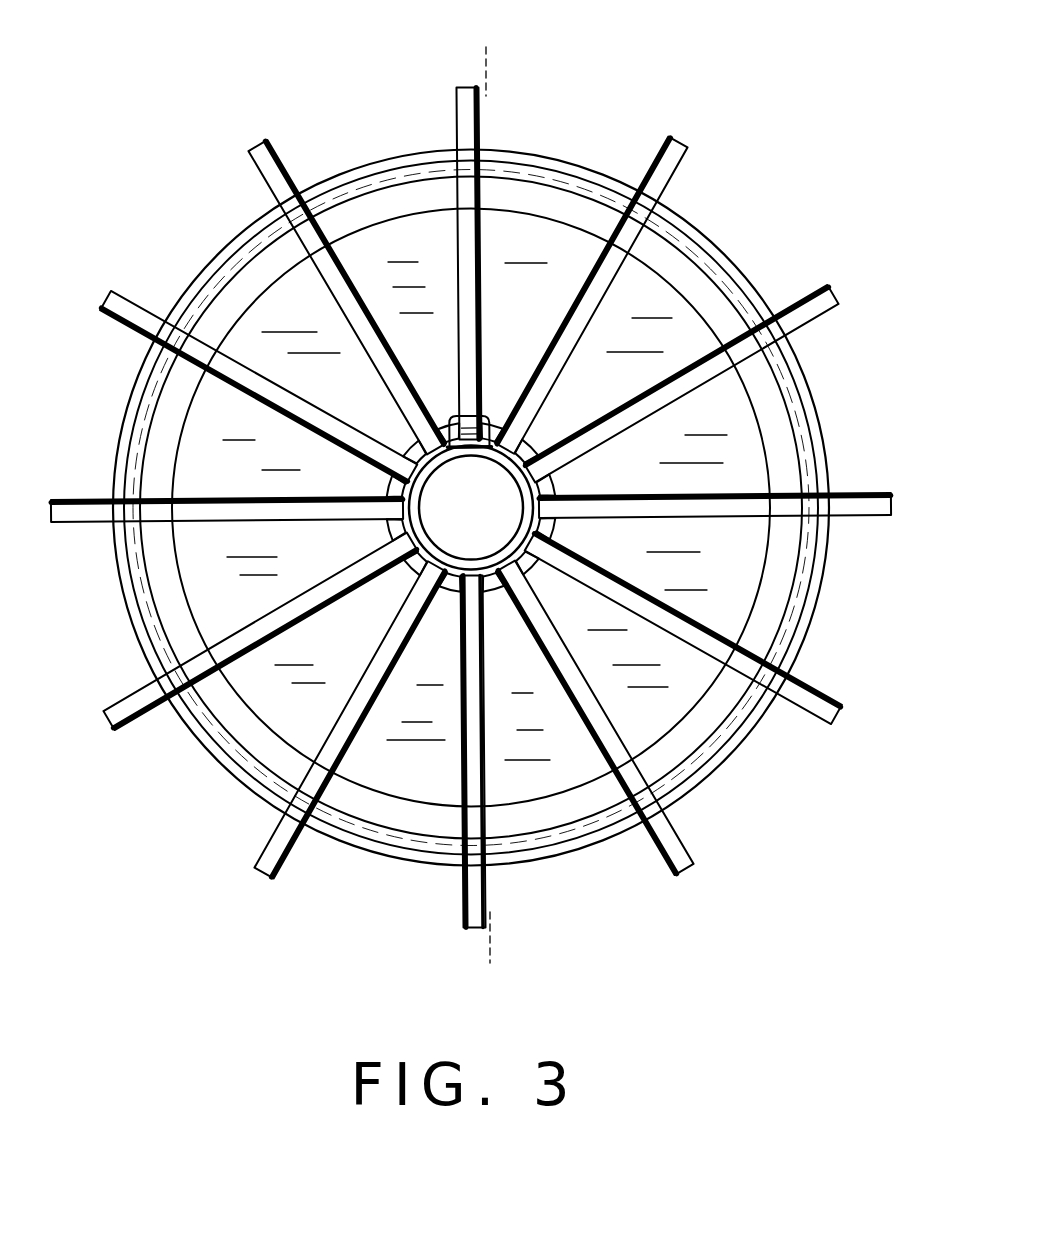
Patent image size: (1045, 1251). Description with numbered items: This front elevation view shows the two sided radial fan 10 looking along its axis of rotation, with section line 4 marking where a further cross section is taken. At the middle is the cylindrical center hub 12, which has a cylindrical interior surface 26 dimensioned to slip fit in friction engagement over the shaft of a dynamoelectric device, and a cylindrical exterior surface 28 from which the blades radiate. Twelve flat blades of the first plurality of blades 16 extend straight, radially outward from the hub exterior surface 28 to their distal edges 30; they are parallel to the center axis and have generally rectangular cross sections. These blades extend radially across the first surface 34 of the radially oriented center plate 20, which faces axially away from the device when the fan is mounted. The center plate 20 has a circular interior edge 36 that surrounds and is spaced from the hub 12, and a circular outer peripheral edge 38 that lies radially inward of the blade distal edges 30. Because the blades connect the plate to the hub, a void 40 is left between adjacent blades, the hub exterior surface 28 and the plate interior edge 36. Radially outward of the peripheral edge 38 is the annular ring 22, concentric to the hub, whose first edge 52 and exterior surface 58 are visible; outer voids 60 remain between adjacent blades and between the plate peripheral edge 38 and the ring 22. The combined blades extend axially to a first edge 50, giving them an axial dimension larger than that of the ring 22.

The section line 4- 4 is at (486, 47).
The two sided radial fan 10 is at (680, 93).
The center hub 12 is at (395, 450).
The first plurality of fan blades 16 is at (150, 307).
The radially oriented plate 20 is at (731, 440).
The annular ring 22 is at (833, 462).
The cylindrical interior surface 26 is at (452, 517).
The cylindrical exterior surface 28 is at (440, 545).
The distal edges 30 is at (107, 303).
The first surface 34 is at (390, 240).
The circular interior edge 36 is at (250, 303).
The outer peripheral edge 38 is at (217, 262).
The void 40 is at (549, 427).
The first edge 50 is at (123, 323).
The first edge 52 is at (793, 352).
The exterior surface 58 is at (803, 390).
The outer voids 60 is at (537, 190).